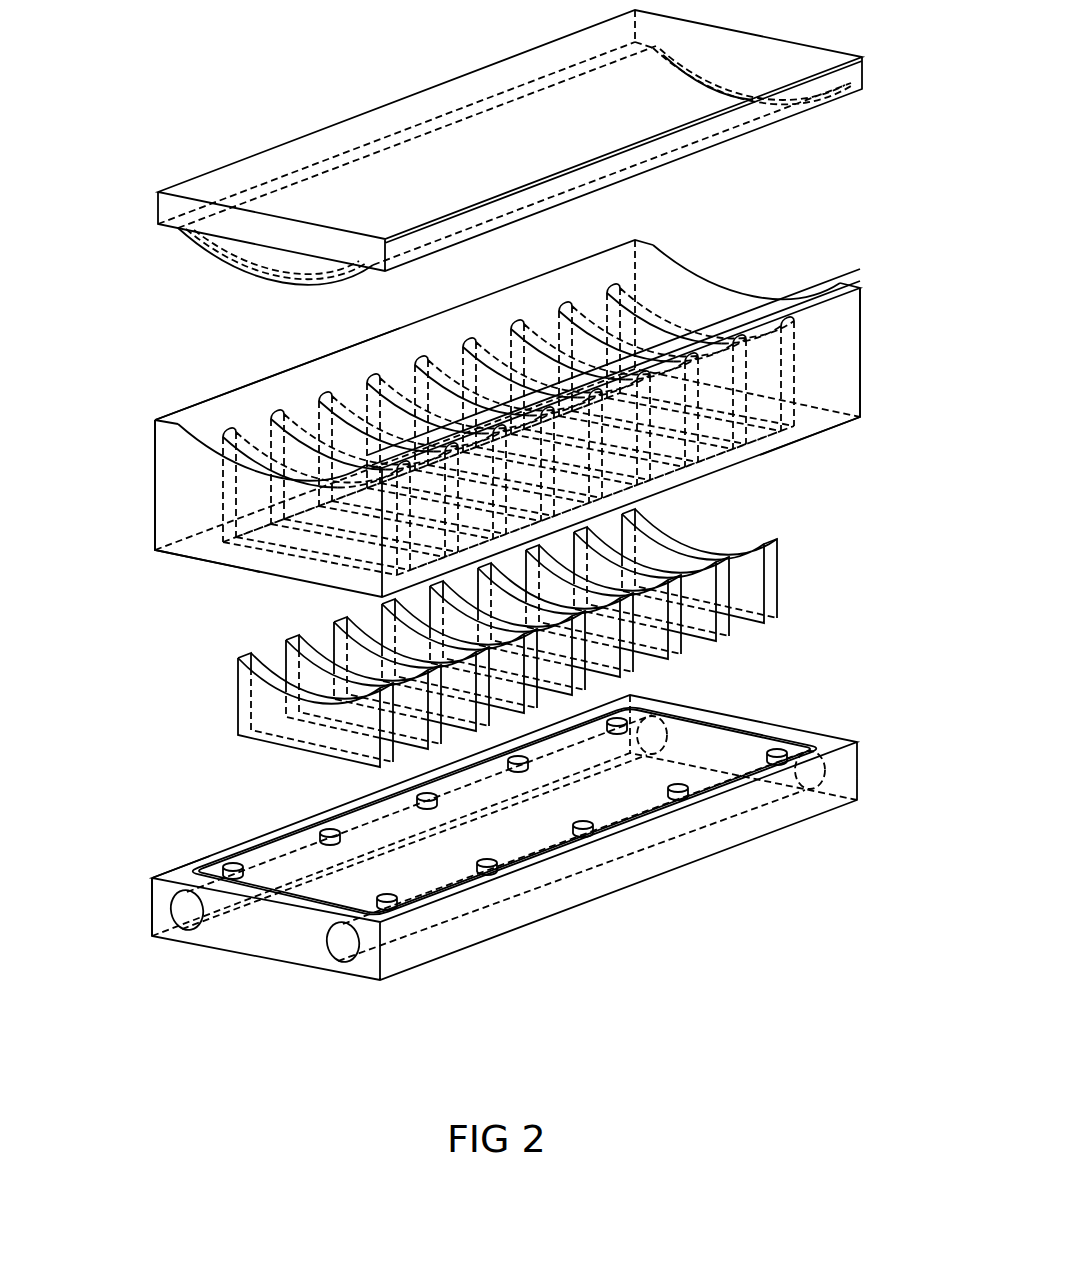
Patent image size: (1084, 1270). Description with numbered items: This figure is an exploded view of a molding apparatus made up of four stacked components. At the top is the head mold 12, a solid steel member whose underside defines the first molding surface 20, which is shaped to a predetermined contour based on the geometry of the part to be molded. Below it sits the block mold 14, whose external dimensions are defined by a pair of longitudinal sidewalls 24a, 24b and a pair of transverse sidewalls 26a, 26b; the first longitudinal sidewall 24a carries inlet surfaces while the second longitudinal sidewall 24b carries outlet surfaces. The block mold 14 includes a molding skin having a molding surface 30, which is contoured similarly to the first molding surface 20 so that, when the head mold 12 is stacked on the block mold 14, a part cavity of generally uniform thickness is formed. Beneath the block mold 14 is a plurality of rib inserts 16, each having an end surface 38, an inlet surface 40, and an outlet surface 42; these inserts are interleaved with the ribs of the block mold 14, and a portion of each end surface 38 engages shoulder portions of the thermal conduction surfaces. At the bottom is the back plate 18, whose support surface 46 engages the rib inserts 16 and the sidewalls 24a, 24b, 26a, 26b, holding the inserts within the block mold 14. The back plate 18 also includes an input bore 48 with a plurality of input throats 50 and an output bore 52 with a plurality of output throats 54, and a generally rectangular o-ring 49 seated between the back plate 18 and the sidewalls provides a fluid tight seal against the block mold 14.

The head mold 12 is at (507, 151).
The first molding surface 20 is at (255, 281).
The block mold 14 is at (504, 423).
The first longitudinal sidewall 24a is at (763, 443).
The second longitudinal sidewall 24b is at (160, 438).
The transverse sidewall 26a is at (158, 520).
The transverse sidewall 26b is at (850, 363).
The molding surface 30 is at (280, 477).
The rib inserts 16 is at (491, 628).
The end surface 38 is at (668, 562).
The inlet surface 40 is at (773, 600).
The outlet surface 42 is at (238, 708).
The back plate 18 is at (499, 862).
The support surface 46 is at (173, 870).
The o-ring 49 is at (240, 847).
The output throats 54 is at (407, 790).
The input throats 50 is at (435, 897).
The output bore 52 is at (183, 923).
The input bore 48 is at (340, 957).